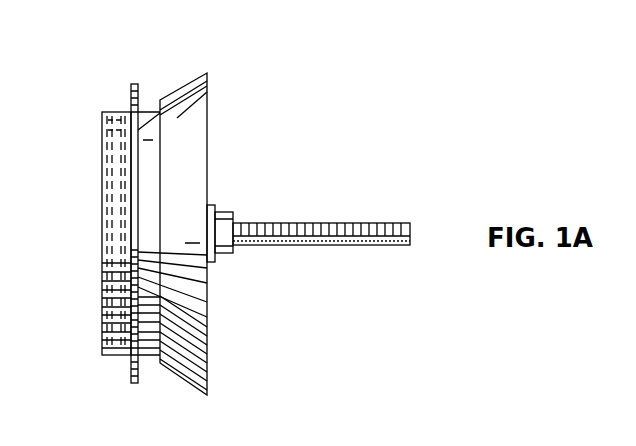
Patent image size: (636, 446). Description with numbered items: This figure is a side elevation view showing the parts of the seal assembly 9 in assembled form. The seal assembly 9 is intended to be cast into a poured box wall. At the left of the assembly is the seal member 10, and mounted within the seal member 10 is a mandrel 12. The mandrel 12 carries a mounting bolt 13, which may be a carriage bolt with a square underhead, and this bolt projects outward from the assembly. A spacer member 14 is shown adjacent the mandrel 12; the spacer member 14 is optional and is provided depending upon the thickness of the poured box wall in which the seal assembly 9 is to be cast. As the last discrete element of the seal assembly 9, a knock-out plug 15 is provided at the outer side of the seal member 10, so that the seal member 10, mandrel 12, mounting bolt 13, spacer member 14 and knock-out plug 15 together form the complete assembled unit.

The seal assembly 9 is at (312, 119).
The seal member 10 is at (128, 94).
The mandrel 12 is at (150, 103).
The mounting bolt 13 is at (350, 225).
The spacer member 14 is at (207, 112).
The knock-out plug 15 is at (110, 160).